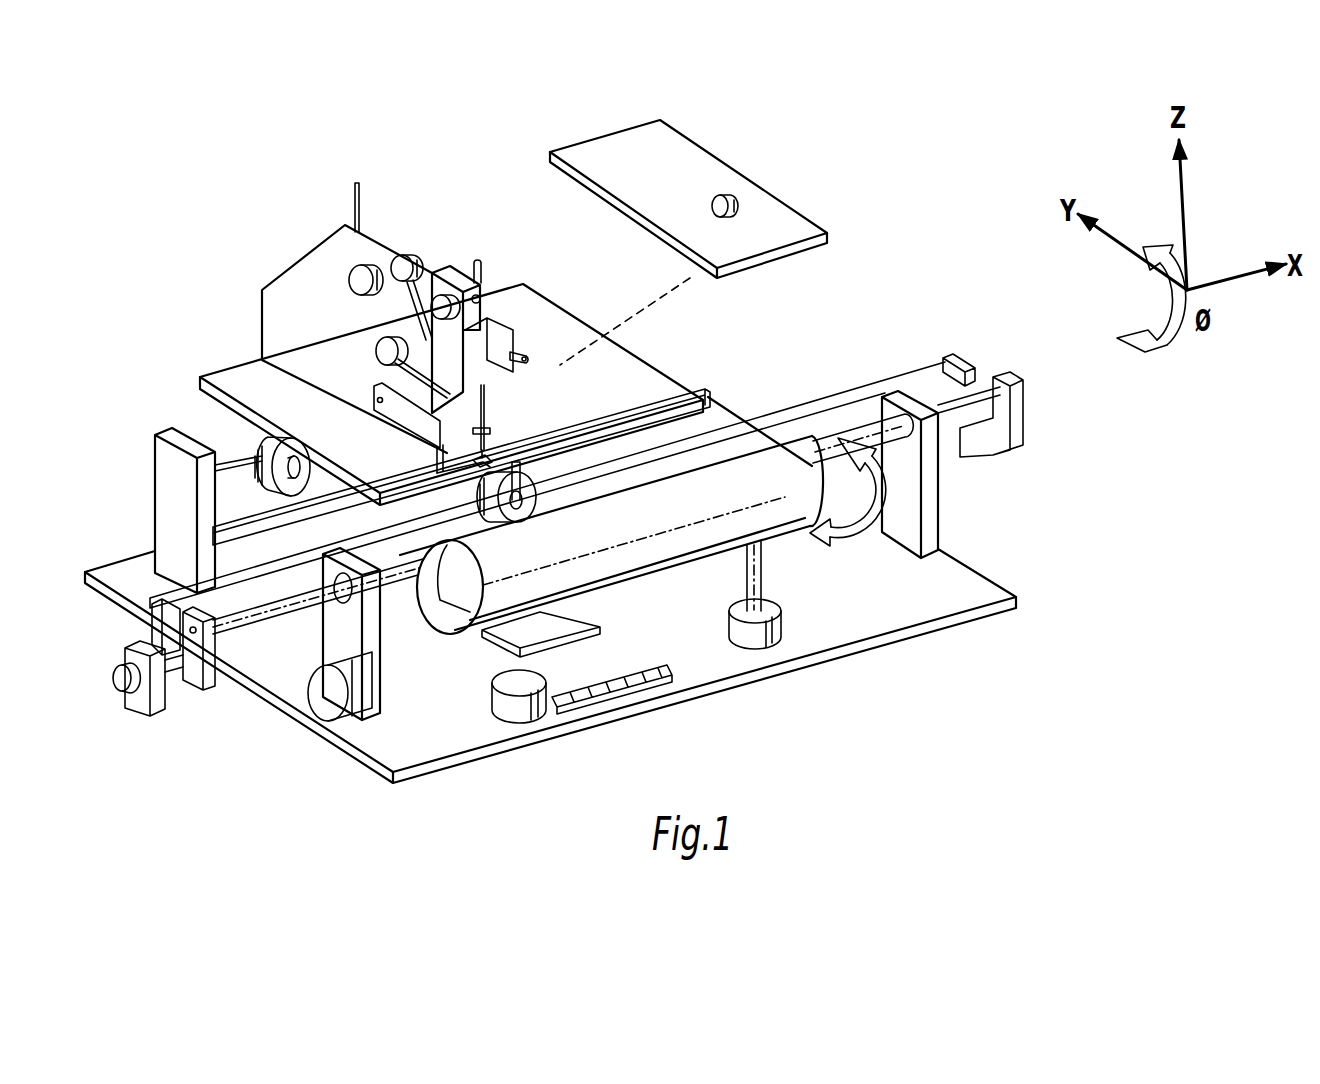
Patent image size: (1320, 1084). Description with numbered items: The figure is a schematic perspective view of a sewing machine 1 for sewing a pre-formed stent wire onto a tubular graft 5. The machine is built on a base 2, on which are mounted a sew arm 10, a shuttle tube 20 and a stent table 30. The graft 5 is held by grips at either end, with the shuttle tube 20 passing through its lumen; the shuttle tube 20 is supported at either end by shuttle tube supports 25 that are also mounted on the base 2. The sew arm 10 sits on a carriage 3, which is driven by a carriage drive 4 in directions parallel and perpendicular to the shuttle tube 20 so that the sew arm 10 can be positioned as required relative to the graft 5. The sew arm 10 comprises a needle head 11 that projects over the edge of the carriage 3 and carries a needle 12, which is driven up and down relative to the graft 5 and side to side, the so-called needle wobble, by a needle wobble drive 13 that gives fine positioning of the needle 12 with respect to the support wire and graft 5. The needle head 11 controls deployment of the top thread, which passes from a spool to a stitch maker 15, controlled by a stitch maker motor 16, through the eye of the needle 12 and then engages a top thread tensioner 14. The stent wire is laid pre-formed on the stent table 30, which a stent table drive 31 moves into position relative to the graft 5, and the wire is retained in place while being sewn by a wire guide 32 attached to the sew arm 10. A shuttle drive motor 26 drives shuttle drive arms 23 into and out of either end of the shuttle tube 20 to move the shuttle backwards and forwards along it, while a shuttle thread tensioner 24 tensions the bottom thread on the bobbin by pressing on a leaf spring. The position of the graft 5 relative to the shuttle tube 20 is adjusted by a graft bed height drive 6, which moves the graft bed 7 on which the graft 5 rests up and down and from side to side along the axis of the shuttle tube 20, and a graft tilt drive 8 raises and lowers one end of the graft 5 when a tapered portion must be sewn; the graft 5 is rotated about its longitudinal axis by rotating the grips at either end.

The sewing machine 1 is at (188, 242).
The base 2 is at (960, 598).
The carriage 3 is at (556, 296).
The carriage drive 4 is at (268, 450).
The graft 5 is at (680, 538).
The graft bed height drive 6 is at (500, 705).
The graft bed 7 is at (582, 612).
The graft tilt drive 8 is at (765, 587).
The sew arm 10 is at (332, 258).
The needle head 11 is at (452, 278).
The needle 12 is at (506, 430).
The needle wobble drive 13 is at (380, 355).
The top thread tensioner 14 is at (368, 268).
The stitch maker 15 is at (536, 333).
The stitch maker motor 16 is at (407, 260).
The shuttle tube 20 is at (821, 443).
The shuttle drive arms 23 is at (960, 363).
The shuttle thread tensioner 24 is at (138, 713).
The shuttle tube supports 25 is at (357, 632).
The shuttle drive motor 26 is at (532, 492).
The stent table 30 is at (612, 140).
The stent table drive 31 is at (738, 212).
The wire guide 32 is at (417, 395).